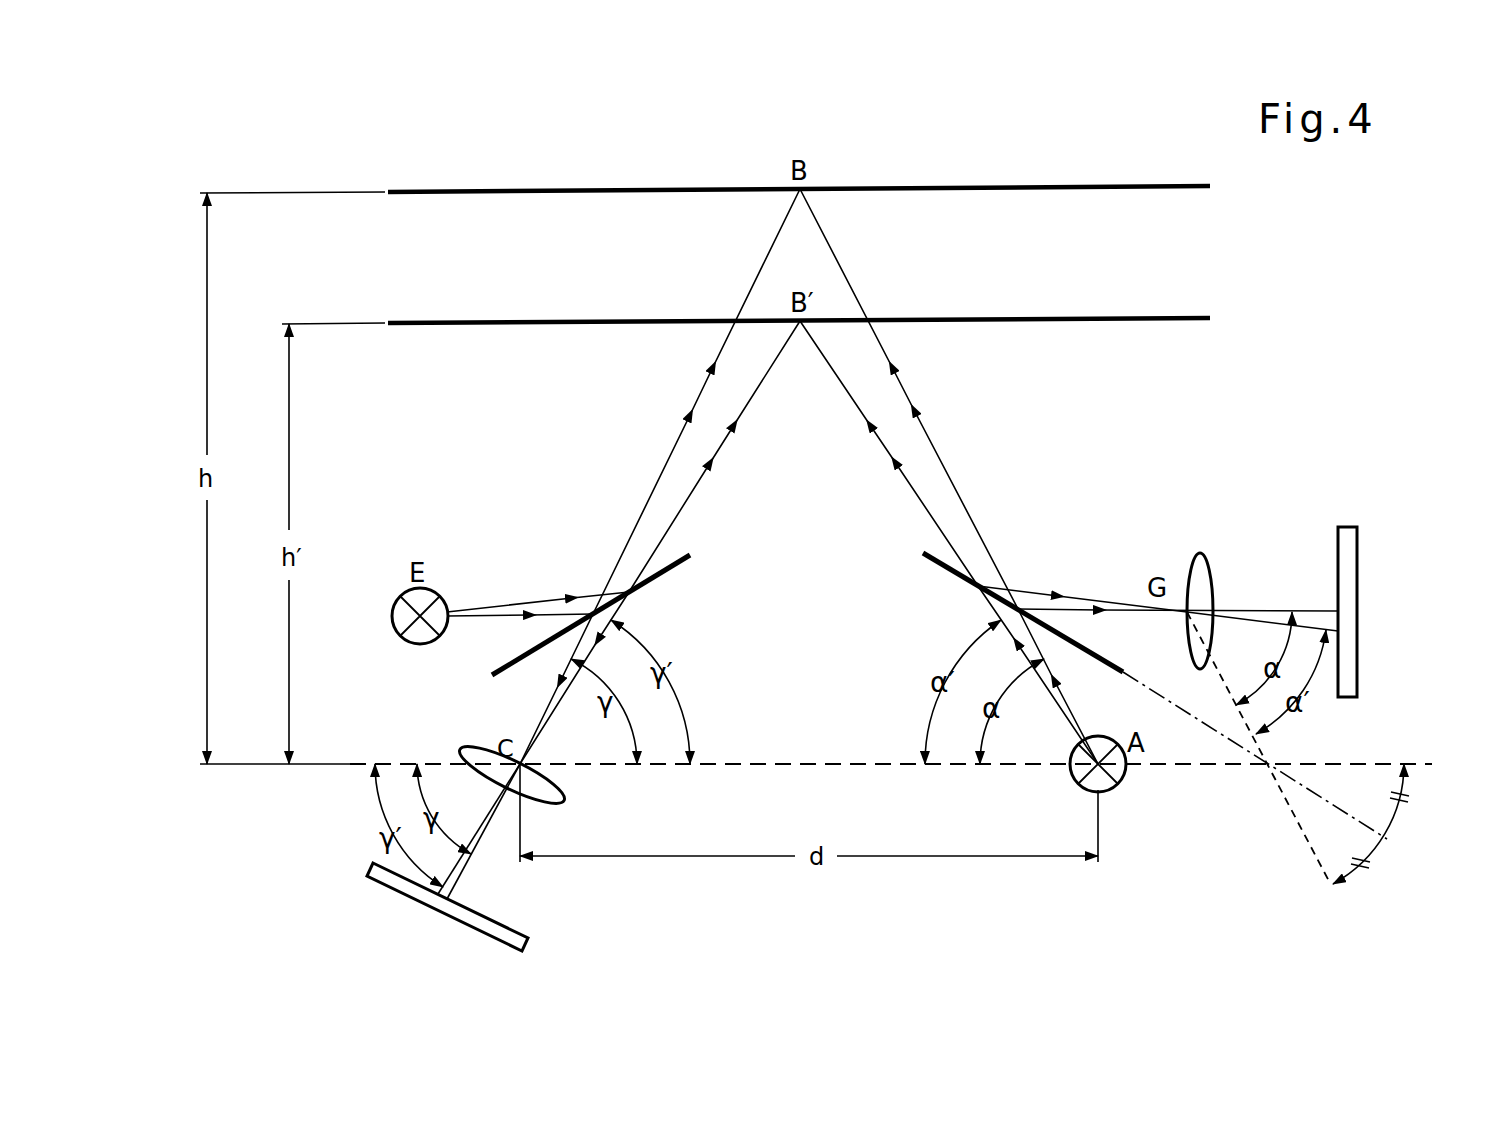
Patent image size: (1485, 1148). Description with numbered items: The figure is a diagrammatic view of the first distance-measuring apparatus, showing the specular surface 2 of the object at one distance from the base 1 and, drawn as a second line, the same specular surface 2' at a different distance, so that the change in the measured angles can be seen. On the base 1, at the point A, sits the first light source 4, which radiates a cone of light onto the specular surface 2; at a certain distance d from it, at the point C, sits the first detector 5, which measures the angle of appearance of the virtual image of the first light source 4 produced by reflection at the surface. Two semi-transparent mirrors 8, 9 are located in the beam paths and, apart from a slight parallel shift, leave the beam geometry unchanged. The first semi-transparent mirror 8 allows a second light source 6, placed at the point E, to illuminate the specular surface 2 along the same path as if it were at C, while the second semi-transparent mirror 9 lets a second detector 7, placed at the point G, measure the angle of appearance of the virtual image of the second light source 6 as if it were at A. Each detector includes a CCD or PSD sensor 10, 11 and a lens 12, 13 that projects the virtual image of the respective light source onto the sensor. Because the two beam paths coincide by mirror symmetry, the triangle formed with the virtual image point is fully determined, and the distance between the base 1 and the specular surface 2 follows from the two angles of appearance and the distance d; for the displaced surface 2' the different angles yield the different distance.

The base 1 is at (1428, 764).
The specular surface 2 is at (705, 216).
The specular surface 2' is at (746, 348).
The first light source 4 is at (1108, 788).
The first detector 5 is at (508, 889).
The second light source 6 is at (392, 615).
The second detector 7 is at (1278, 569).
The first semi-transparent mirror 8 is at (672, 567).
The second semi-transparent mirror 9 is at (946, 565).
The CCD sensor 10 is at (516, 937).
The CCD sensor 11 is at (1338, 528).
The lens 12 is at (562, 796).
The lens 13 is at (1200, 555).